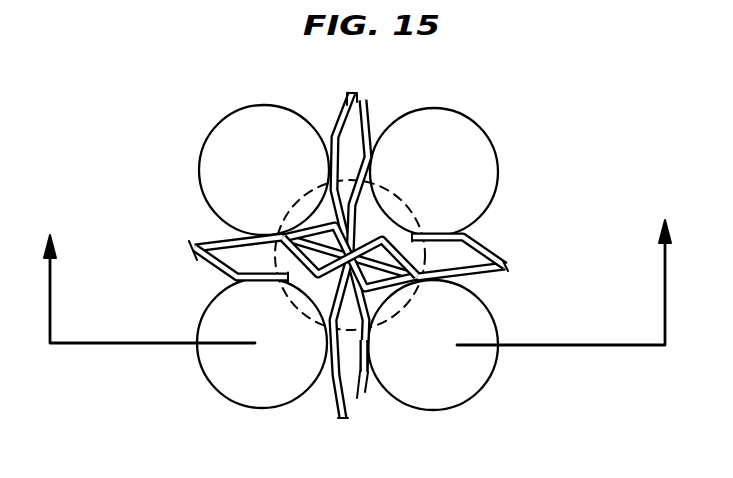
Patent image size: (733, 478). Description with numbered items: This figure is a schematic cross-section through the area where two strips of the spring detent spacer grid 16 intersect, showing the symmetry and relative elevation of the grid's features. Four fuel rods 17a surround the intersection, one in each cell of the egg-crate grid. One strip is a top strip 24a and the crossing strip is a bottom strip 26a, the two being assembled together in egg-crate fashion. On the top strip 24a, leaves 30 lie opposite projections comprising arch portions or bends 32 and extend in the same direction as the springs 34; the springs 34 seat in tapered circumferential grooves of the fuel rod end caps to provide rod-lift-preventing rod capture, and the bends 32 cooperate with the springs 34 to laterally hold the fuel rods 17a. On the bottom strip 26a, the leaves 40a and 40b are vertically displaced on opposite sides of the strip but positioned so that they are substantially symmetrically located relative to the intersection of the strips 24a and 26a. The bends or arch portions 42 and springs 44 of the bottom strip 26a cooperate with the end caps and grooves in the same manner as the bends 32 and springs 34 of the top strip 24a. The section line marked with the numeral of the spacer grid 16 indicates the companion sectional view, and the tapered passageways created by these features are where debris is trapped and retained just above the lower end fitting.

The spacer grid 16 is at (351, 267).
The fuel rods 17a is at (212, 168).
The top strips 24a is at (347, 420).
The bottom strips 26a is at (503, 271).
The leaves 30 is at (353, 95).
The arch portions 32 is at (372, 128).
The springs 34 is at (332, 133).
The leaf 40a is at (283, 236).
The leaf 40b is at (250, 244).
The arch portions 42 is at (300, 226).
The springs 44 is at (235, 280).